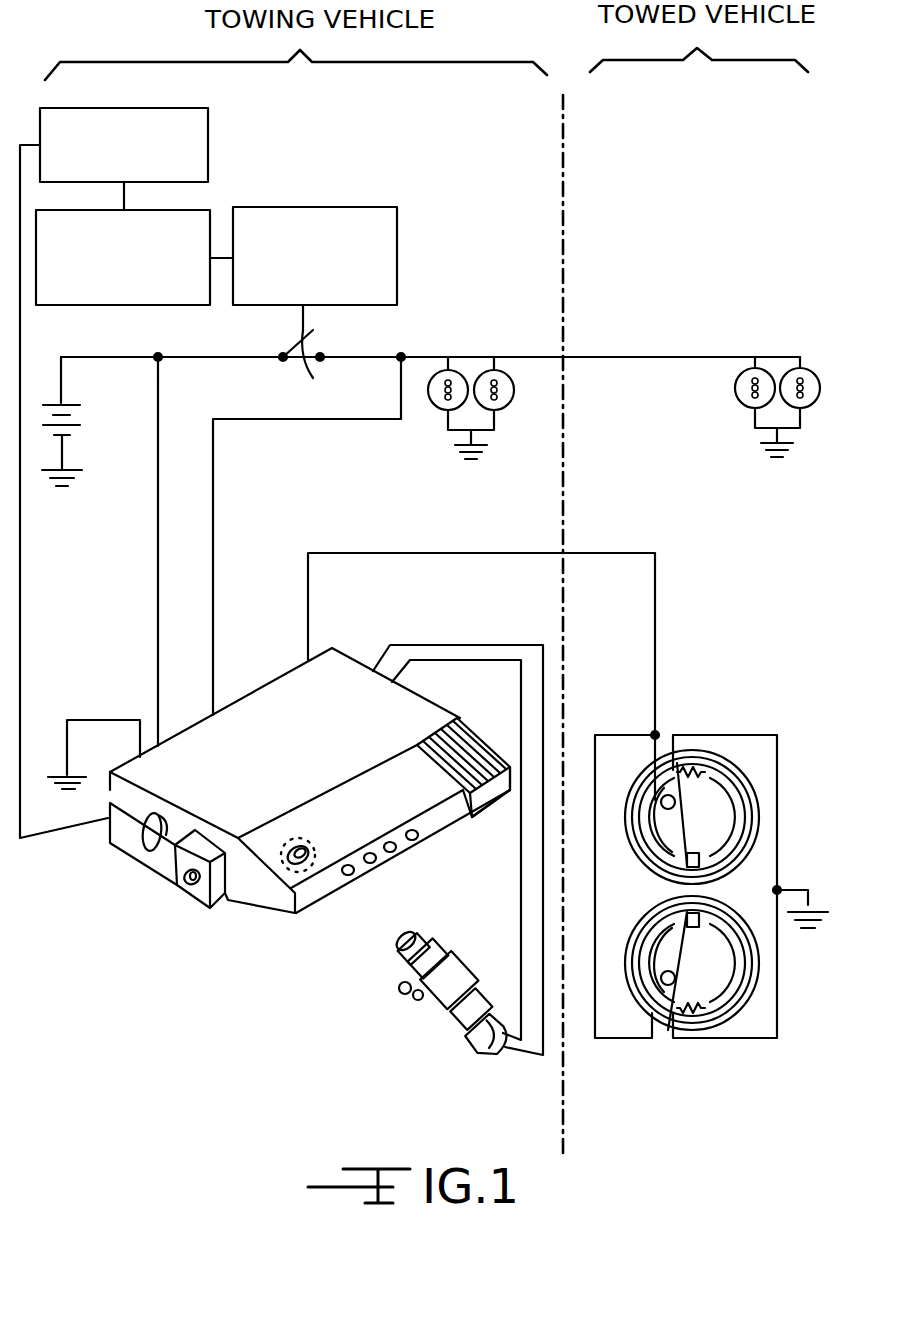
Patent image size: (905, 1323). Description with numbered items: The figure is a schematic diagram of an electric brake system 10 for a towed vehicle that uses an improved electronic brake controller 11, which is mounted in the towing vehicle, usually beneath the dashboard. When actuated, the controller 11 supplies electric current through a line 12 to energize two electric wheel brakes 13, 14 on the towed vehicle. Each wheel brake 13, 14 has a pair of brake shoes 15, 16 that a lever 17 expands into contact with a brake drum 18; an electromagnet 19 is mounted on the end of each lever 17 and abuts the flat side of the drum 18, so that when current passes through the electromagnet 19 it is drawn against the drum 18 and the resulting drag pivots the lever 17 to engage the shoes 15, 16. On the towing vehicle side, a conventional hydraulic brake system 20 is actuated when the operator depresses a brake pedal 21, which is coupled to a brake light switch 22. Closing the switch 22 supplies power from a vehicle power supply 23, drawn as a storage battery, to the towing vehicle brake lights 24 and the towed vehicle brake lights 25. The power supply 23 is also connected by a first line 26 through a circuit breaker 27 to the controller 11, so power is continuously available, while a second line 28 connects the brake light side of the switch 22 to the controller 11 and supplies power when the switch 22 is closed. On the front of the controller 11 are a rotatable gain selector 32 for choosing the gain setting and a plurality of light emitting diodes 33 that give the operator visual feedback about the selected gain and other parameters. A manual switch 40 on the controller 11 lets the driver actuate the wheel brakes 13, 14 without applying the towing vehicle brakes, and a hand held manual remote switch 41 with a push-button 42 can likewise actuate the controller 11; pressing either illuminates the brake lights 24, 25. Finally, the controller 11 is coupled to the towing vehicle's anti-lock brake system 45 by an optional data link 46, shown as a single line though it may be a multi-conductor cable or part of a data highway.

The electric brake system 10 is at (603, 503).
The electronic brake controller 11 is at (350, 650).
The line 12 is at (503, 552).
The electric wheel brake 13 is at (760, 782).
The electric wheel brake 14 is at (745, 1018).
The brake shoe 15 is at (643, 789).
The brake shoe 16 is at (745, 835).
The lever 17 is at (690, 836).
The brake drum 18 is at (677, 890).
The electromagnet 19 is at (680, 803).
The hydraulic brake system 20 is at (137, 306).
The brake pedal 21 is at (397, 258).
The brake light switch 22 is at (302, 356).
The vehicle power supply 23 is at (75, 428).
The towing vehicle brake light 24 is at (432, 406).
The towed vehicle brake light 25 is at (735, 382).
The first line 26 is at (158, 598).
The circuit breaker 27 is at (152, 412).
The second line 28 is at (215, 565).
The rotatable gain selector 32 is at (310, 845).
The light emitting diodes 33 is at (362, 866).
The manual switch 40 is at (490, 802).
The manual remote switch 41 is at (460, 1020).
The push-button 42 is at (397, 948).
The anti-lock brake system 45 is at (208, 145).
The data link 46 is at (20, 580).